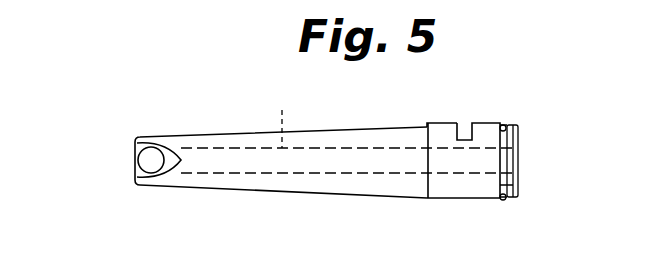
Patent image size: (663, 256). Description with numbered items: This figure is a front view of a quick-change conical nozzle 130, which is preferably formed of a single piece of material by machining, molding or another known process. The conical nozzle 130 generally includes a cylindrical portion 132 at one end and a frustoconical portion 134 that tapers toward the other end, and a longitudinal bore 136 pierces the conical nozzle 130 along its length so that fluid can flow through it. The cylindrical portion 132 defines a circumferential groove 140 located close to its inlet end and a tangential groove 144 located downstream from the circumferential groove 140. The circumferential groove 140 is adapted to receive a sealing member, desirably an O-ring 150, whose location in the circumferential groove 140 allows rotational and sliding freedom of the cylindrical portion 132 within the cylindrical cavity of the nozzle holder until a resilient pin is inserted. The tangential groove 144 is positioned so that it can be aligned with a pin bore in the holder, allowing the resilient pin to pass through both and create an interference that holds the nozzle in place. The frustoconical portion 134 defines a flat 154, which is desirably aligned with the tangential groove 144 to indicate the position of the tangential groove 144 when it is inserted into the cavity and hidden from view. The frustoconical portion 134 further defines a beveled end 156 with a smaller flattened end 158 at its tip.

The conical nozzle 130 is at (152, 110).
The cylindrical portion 132 is at (460, 200).
The frustoconical portion 134 is at (260, 193).
The longitudinal bore 136 is at (282, 110).
The circumferential groove 140 is at (515, 186).
The tangential groove 144 is at (465, 128).
The O-ring 150 is at (508, 125).
The flat 154 is at (382, 127).
The beveled end 156 is at (136, 170).
The flattened end 158 is at (134, 150).